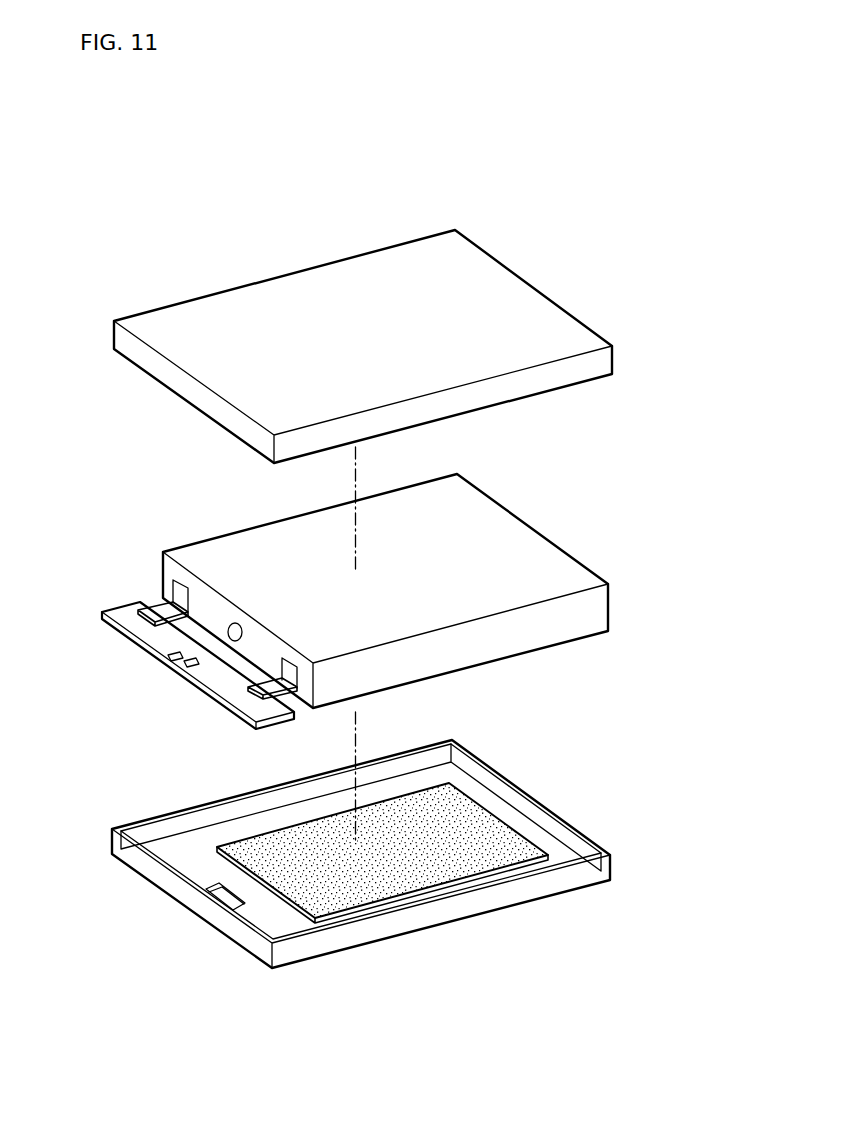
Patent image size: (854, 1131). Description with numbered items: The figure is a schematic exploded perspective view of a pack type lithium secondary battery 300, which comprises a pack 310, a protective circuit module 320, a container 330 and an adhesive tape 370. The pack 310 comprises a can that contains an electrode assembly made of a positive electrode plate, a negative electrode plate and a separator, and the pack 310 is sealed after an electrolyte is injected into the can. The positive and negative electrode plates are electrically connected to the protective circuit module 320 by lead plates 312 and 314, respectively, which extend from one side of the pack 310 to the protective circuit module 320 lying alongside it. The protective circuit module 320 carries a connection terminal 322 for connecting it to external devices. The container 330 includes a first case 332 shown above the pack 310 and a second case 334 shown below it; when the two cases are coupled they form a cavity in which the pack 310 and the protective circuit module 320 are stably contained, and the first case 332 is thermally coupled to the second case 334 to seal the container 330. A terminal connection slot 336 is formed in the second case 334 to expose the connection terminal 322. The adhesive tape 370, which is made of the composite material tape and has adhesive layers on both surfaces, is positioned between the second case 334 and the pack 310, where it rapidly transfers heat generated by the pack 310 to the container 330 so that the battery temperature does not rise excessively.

The pack type lithium secondary battery 300 is at (625, 190).
The pack 310 is at (505, 535).
The lead plate 312 is at (180, 592).
The lead plate 314 is at (240, 685).
The protective circuit module 320 is at (123, 610).
The connection terminal 322 is at (158, 652).
The container 330 is at (688, 282).
The first case 332 is at (553, 323).
The second case 334 is at (522, 830).
The terminal connection slot 336 is at (210, 895).
The adhesive tape 370 is at (257, 848).